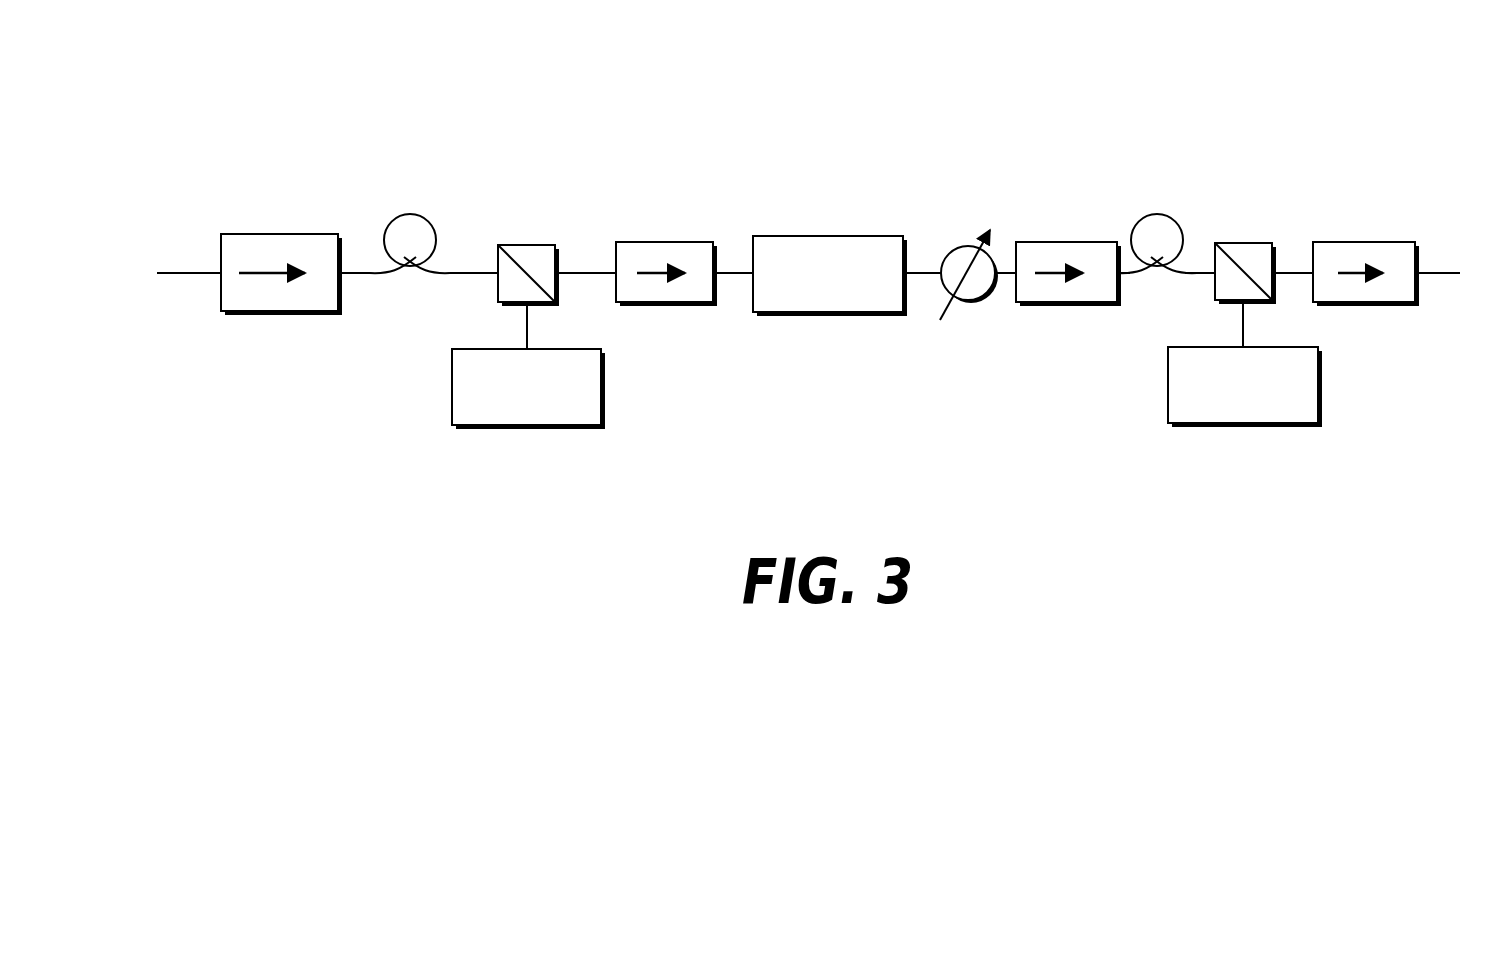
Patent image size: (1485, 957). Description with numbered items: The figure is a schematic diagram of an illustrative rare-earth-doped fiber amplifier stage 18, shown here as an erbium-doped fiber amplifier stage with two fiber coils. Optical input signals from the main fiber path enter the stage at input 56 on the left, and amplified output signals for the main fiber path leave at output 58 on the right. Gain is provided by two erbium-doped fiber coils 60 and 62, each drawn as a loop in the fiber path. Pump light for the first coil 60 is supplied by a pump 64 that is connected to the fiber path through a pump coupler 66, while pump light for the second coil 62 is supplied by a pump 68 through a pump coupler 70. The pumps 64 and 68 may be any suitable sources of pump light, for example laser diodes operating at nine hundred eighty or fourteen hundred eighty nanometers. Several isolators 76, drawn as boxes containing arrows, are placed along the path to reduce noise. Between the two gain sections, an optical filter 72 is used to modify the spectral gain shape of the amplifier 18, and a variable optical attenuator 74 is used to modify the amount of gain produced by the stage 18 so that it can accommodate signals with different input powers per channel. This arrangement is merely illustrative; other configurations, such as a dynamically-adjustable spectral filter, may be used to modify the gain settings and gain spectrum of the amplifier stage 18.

The amplifier stage 18 is at (218, 126).
The input 56 is at (186, 274).
The output 58 is at (1445, 274).
The erbium-doped fiber coil 60 is at (437, 176).
The erbium-doped fiber coil 62 is at (1172, 178).
The pump 64 is at (601, 397).
The pump coupler 66 is at (523, 244).
The pump 68 is at (1318, 405).
The pump coupler 70 is at (1240, 244).
The filter 72 is at (802, 235).
The variable optical attenuator 74 is at (970, 245).
The isolators 76 is at (269, 313).